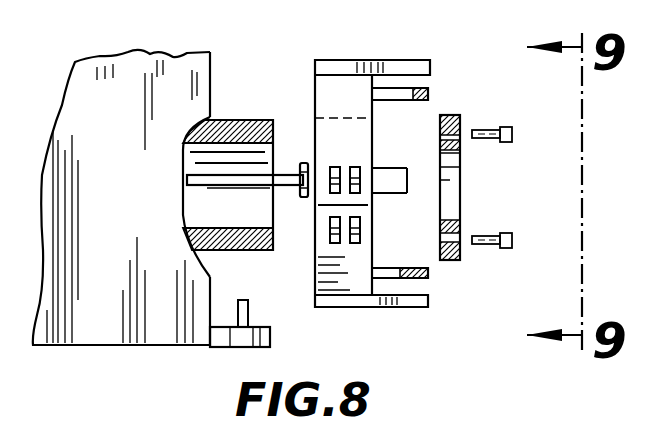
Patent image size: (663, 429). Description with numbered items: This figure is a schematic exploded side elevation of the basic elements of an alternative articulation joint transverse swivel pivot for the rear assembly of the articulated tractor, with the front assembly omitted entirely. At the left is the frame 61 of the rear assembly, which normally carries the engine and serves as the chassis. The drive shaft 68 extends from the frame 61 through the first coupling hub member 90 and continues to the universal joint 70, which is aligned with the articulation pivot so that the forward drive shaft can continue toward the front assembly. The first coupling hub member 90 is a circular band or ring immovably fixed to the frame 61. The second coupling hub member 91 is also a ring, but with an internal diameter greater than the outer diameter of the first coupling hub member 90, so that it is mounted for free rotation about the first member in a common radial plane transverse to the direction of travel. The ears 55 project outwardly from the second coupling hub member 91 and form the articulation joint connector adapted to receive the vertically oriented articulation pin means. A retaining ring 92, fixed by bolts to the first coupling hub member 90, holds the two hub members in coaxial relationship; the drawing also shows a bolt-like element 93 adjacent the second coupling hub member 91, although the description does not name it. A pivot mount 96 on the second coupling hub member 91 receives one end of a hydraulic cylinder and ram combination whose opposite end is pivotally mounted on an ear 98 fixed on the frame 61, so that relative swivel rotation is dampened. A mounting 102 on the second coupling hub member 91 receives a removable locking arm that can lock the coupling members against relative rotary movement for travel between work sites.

The frame 61 is at (128, 120).
The drive shaft 68 is at (207, 184).
The first coupling hub member 90 is at (240, 120).
The universal joint 70 is at (303, 197).
The ear 98 is at (250, 310).
The second coupling hub member 91 is at (343, 93).
The pivot mount 96 is at (357, 165).
The bolt 93 is at (408, 172).
The mounting 102 is at (355, 243).
The ears 55 is at (428, 66).
The retaining ring 92 is at (460, 184).